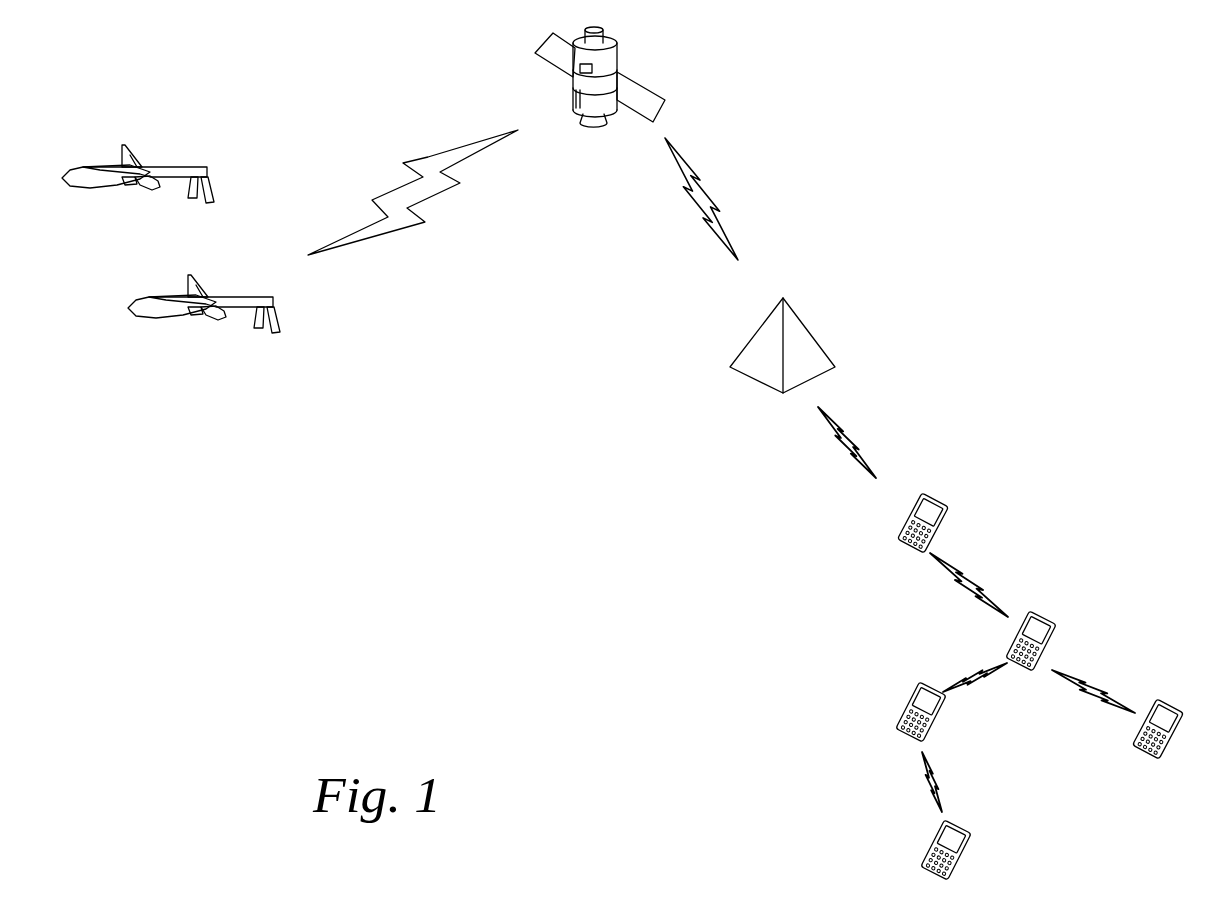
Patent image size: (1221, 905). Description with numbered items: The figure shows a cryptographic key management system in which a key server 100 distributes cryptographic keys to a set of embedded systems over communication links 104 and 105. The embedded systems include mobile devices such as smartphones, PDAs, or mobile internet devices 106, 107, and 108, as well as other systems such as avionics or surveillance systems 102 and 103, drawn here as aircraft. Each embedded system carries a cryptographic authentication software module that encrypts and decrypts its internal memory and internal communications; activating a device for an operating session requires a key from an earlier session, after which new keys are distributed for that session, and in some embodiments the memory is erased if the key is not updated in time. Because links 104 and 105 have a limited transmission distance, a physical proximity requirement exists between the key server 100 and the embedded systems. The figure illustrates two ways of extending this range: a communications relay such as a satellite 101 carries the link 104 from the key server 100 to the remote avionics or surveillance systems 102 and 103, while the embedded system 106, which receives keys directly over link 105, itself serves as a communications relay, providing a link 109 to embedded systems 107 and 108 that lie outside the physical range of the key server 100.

The key server 100 is at (783, 298).
The satellite 101 is at (617, 60).
The embedded system (avionics or surveillance system) 102 is at (124, 145).
The embedded system (avionics or surveillance system) 103 is at (190, 275).
The communication link 104 is at (428, 157).
The communication link 105 is at (838, 432).
The embedded system (mobile device) 106 is at (922, 492).
The embedded system (mobile device) 107 is at (1030, 612).
The embedded system (mobile device) 108 is at (922, 682).
The link 109 is at (1006, 616).